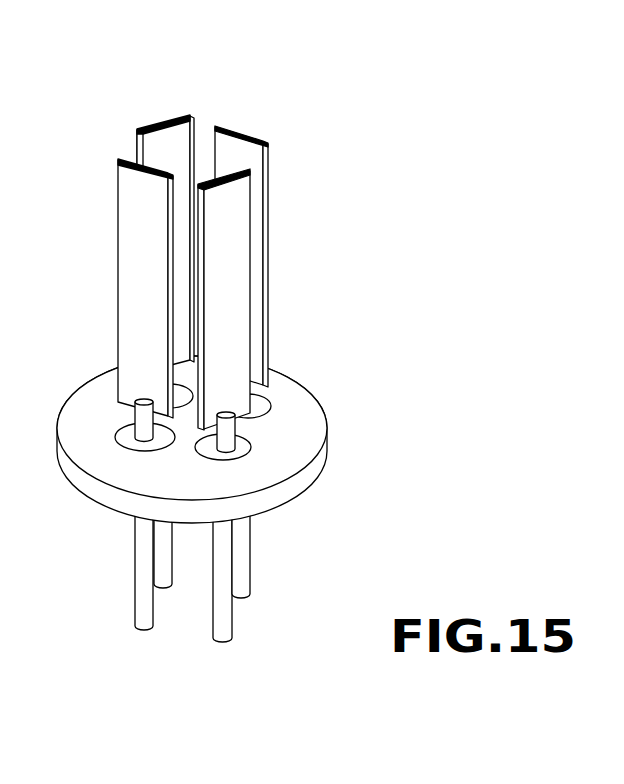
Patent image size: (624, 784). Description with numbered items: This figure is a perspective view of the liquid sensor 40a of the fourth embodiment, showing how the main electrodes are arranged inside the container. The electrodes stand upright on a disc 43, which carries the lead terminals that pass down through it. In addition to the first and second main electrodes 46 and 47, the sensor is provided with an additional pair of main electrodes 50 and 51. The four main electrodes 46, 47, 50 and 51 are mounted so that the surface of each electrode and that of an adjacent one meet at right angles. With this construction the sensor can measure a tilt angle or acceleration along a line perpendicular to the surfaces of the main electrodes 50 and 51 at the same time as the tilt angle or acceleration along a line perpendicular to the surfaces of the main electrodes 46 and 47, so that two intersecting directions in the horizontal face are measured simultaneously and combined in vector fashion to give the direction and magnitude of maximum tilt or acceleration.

The liquid sensor 40a is at (208, 338).
The disc 43 is at (303, 405).
The first main electrode 46 is at (123, 161).
The second main electrode 47 is at (262, 139).
The main electrode 50 is at (237, 215).
The main electrode 51 is at (174, 119).